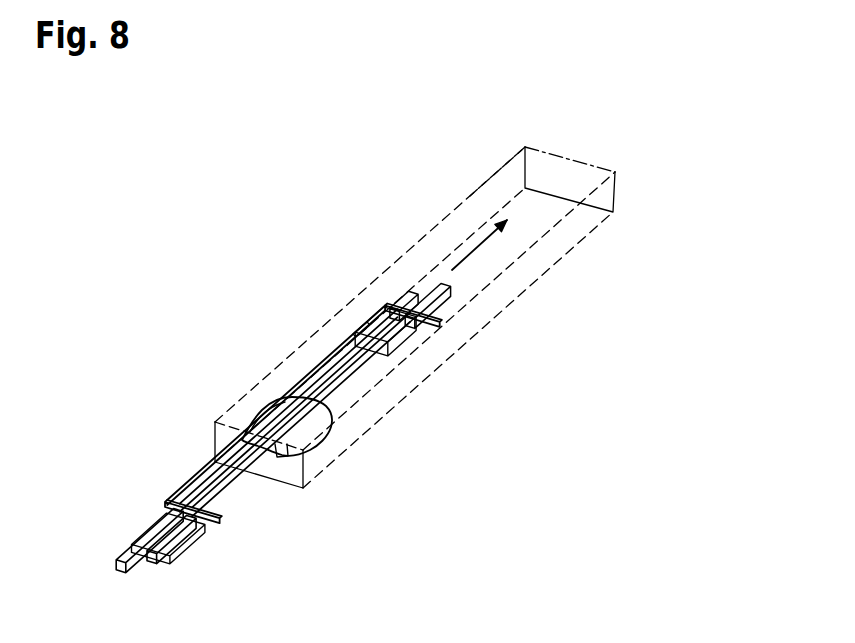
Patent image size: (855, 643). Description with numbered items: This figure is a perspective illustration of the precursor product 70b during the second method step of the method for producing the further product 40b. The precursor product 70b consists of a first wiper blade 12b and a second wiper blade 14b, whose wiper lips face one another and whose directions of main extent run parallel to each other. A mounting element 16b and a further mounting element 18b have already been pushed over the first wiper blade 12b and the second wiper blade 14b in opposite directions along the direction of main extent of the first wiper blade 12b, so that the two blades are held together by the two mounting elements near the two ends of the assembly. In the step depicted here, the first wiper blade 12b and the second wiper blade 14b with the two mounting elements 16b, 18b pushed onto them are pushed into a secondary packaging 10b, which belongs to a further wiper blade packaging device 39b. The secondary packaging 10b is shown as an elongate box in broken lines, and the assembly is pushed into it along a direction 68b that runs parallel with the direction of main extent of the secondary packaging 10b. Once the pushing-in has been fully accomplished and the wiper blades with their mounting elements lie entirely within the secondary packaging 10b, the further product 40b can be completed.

The secondary packaging 10b is at (592, 230).
The first wiper blade 12b is at (183, 472).
The second wiper blade 14b is at (242, 502).
The mounting element 16b is at (167, 507).
The further mounting element 18b is at (390, 309).
The further wiper blade packaging device 39b is at (488, 165).
The further product 40b is at (621, 140).
The direction 68b is at (471, 252).
The precursor product 70b is at (97, 442).